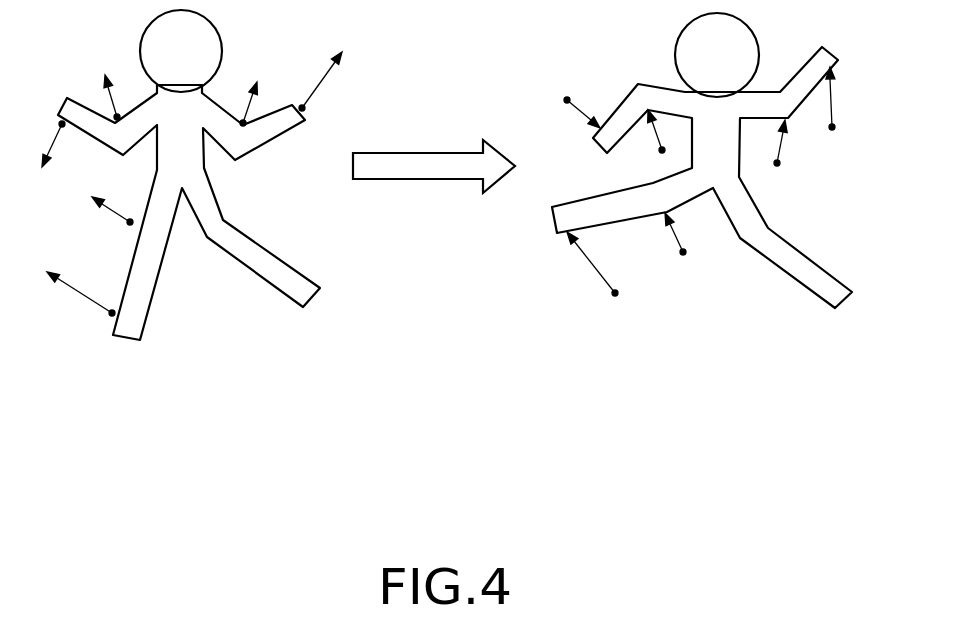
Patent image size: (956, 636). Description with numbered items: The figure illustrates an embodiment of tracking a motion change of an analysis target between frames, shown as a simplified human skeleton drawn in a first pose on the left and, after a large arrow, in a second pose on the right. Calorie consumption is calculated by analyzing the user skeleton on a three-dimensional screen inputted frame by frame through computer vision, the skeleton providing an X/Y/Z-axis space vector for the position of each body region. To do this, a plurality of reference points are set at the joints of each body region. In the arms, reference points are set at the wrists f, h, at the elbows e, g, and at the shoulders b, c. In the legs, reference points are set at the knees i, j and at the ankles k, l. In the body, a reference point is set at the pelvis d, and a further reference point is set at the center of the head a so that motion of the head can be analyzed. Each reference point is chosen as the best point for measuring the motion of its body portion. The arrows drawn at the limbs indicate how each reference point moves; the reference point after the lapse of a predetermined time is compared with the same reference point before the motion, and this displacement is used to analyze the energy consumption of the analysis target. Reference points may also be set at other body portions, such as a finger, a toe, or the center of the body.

The head reference point a is at (181, 51).
The shoulder reference point b is at (162, 102).
The shoulder reference point c is at (195, 102).
The pelvis reference point d is at (189, 212).
The elbow reference point e is at (118, 109).
The wrist reference point f is at (62, 134).
The elbow reference point g is at (242, 116).
The wrist reference point h is at (309, 90).
The knee reference point i is at (124, 217).
The knee reference point j is at (217, 225).
The ankle reference point k is at (92, 301).
The ankle reference point l is at (300, 288).